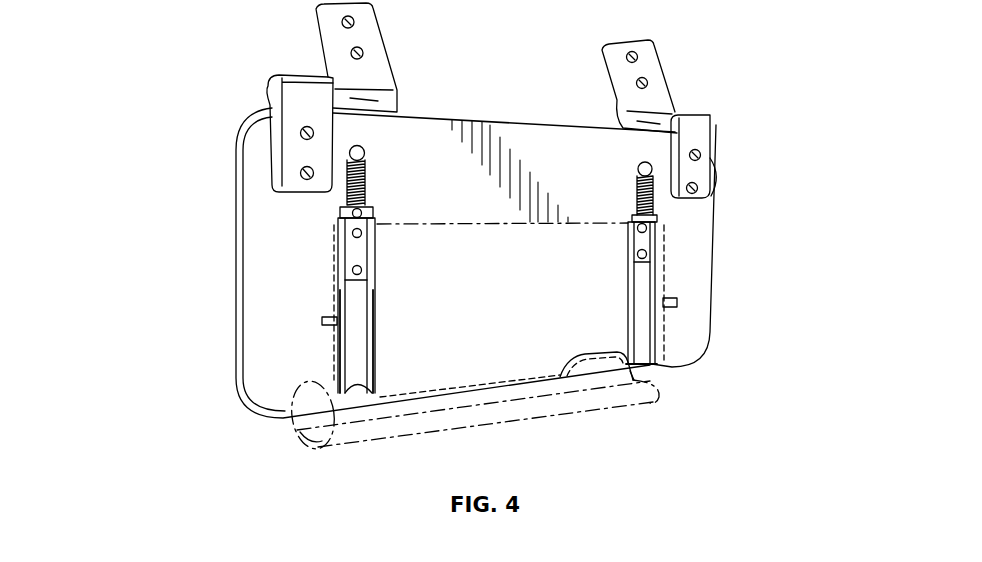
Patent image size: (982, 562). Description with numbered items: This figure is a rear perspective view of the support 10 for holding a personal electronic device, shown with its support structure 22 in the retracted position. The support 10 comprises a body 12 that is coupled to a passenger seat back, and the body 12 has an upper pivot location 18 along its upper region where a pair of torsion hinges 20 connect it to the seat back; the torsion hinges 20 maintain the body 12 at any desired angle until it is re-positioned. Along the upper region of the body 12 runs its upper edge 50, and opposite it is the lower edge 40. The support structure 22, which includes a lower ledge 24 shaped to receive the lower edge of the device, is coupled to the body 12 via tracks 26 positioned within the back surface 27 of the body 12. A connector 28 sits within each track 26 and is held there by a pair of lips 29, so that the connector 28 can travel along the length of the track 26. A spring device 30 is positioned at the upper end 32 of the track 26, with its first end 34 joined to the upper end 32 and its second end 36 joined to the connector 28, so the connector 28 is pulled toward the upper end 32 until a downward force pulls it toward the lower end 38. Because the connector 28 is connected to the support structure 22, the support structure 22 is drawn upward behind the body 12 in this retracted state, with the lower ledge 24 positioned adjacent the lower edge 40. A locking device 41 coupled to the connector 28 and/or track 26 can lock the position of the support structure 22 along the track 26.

The support 10 is at (727, 92).
The body 12 is at (275, 262).
The upper pivot location 18 is at (400, 115).
The torsion hinges 20 is at (328, 99).
The support structure 22 is at (358, 437).
The lower ledge 24 is at (295, 437).
The track 26 is at (643, 282).
The back surface 27 is at (295, 312).
The connector 28 is at (343, 245).
The lips 29 is at (372, 355).
The spring device 30 is at (647, 205).
The upper end 32 is at (348, 157).
The first end 34 is at (367, 153).
The second end 36 is at (340, 207).
The lower end 38 is at (653, 366).
The lower edge 40 is at (647, 370).
The locking device 41 is at (680, 307).
The upper edge 50 is at (525, 122).